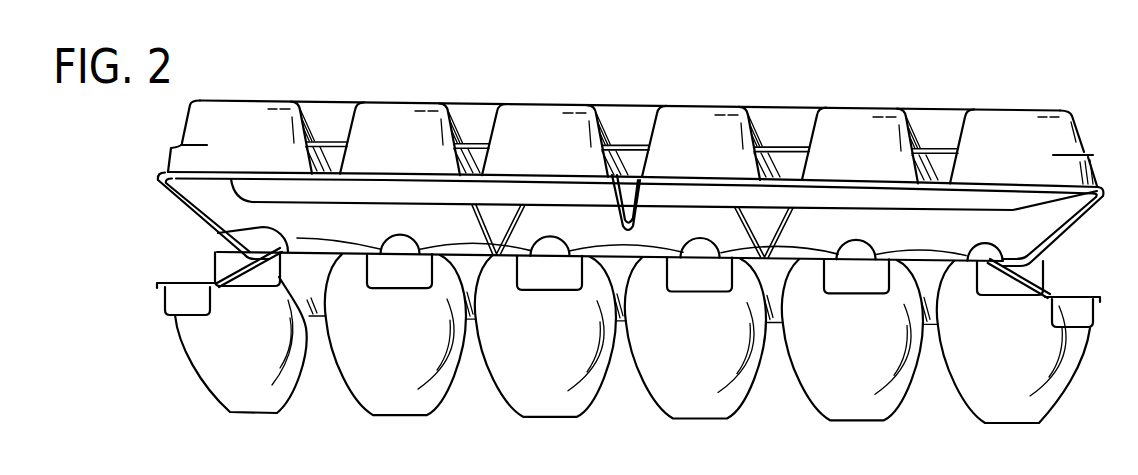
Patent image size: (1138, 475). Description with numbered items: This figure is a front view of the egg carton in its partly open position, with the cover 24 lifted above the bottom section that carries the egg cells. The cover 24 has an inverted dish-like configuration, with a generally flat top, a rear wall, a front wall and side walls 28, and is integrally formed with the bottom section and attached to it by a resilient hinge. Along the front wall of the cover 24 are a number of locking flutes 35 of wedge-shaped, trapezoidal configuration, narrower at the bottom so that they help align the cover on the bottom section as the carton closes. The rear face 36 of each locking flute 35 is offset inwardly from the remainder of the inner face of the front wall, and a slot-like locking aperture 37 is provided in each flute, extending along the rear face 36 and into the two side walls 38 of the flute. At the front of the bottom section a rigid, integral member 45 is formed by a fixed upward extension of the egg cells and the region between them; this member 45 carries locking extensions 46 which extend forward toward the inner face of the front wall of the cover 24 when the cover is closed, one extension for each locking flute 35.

The cover 24 is at (599, 143).
The side walls 28 is at (198, 195).
The locking flute 35 is at (319, 101).
The rear face 36 is at (336, 118).
The locking aperture 37 is at (347, 148).
The side walls of the flute 38 is at (302, 100).
The rigid integral member 45 is at (598, 325).
The locking extensions 46 is at (227, 233).